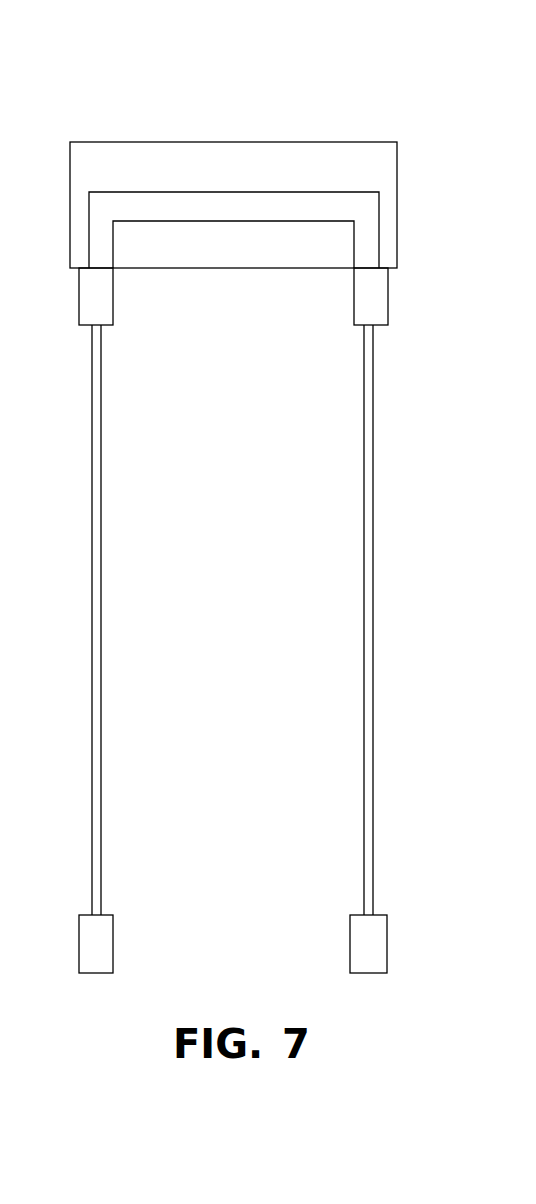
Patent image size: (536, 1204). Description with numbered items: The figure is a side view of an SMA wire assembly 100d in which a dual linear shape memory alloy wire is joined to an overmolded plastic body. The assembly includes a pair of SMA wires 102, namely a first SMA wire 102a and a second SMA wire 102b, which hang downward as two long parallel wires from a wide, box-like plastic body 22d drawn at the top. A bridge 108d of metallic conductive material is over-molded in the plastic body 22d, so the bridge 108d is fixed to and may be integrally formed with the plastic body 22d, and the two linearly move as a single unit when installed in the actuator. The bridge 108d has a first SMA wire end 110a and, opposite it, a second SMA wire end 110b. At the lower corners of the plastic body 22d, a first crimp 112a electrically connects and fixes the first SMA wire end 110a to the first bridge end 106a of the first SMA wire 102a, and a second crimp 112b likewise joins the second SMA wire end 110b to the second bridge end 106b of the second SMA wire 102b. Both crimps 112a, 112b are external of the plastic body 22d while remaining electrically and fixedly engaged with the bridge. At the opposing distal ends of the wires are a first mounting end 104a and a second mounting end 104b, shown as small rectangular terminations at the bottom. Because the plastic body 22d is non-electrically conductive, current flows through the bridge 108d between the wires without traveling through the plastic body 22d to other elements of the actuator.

The SMA wire assembly 100d is at (296, 86).
The plastic body 22d is at (340, 158).
The bridge 108d is at (177, 202).
The first SMA wire end 110a is at (100, 267).
The second SMA wire end 110b is at (365, 267).
The first crimp 112a is at (93, 298).
The second crimp 112b is at (374, 298).
The first bridge end 106a is at (97, 330).
The second bridge end 106b is at (363, 330).
The pair of SMA wires 102 is at (232, 640).
The first SMA wire 102a is at (103, 635).
The second SMA wire 102b is at (364, 636).
The first mounting end 104a is at (95, 975).
The second mounting end 104b is at (368, 975).